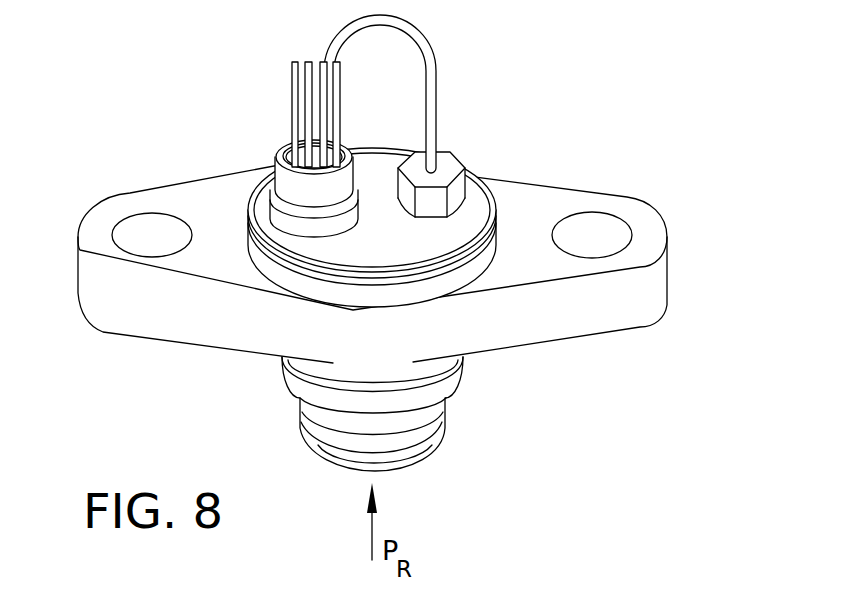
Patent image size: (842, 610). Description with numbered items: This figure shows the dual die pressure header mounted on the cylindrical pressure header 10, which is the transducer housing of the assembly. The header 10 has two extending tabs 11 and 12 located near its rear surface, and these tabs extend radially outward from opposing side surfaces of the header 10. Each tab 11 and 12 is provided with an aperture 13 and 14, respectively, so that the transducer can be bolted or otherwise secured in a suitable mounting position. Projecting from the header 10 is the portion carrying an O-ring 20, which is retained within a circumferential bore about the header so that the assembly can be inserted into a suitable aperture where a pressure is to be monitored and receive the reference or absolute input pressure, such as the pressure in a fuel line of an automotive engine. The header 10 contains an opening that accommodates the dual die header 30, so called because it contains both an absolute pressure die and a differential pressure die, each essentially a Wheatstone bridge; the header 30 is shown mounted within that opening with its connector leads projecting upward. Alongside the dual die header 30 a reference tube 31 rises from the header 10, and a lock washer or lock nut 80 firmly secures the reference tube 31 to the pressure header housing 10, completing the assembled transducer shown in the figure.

The pressure header 10 is at (738, 237).
The extending tab 11 is at (627, 318).
The extending tab 12 is at (165, 340).
The aperture 13 is at (588, 222).
The aperture 14 is at (143, 220).
The O-ring 20 is at (445, 420).
The dual die header 30 is at (262, 154).
The reference tube 31 is at (438, 92).
The lock nut 80 is at (448, 162).